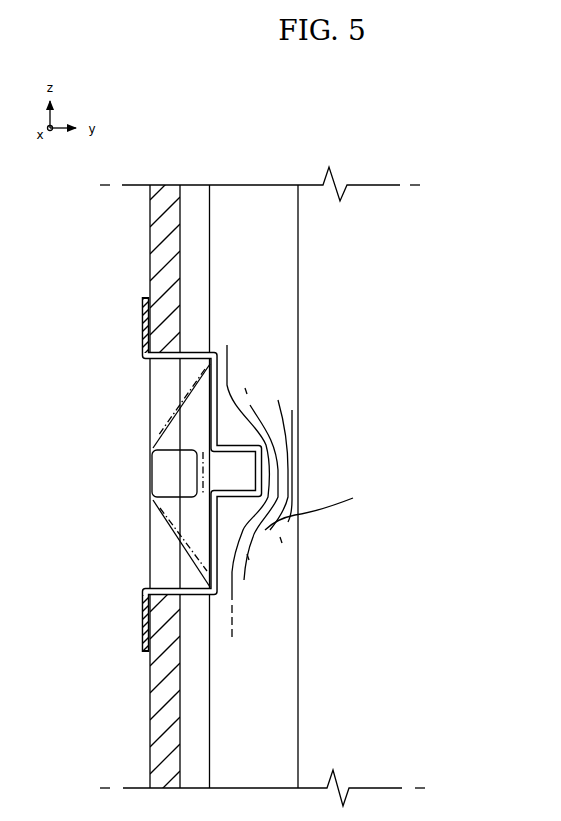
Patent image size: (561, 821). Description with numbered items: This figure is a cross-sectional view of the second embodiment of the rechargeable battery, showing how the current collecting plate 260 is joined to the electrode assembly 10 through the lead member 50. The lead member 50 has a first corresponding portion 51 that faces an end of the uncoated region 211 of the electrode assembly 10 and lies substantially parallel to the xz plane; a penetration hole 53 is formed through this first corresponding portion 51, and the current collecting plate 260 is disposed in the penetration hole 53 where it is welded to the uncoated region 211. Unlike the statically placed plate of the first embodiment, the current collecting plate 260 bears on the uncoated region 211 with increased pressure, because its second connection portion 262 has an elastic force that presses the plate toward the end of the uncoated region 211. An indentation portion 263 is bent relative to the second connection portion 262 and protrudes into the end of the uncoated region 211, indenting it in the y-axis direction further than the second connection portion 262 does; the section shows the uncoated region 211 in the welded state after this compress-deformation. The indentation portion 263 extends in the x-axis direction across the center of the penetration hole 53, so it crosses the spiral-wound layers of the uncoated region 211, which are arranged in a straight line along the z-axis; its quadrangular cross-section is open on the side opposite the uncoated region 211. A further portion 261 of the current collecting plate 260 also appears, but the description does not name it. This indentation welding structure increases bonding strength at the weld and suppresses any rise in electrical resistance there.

The electrode assembly 10 is at (364, 352).
The lead member 50 is at (138, 239).
The first corresponding portion 51 is at (163, 713).
The penetration hole 53 is at (172, 364).
The uncoated region 211 is at (252, 200).
The current collecting plate 260 is at (437, 472).
The first adhesive layer 261 is at (185, 615).
The second connection portion 262 is at (180, 543).
The indentation portion 263 is at (263, 468).